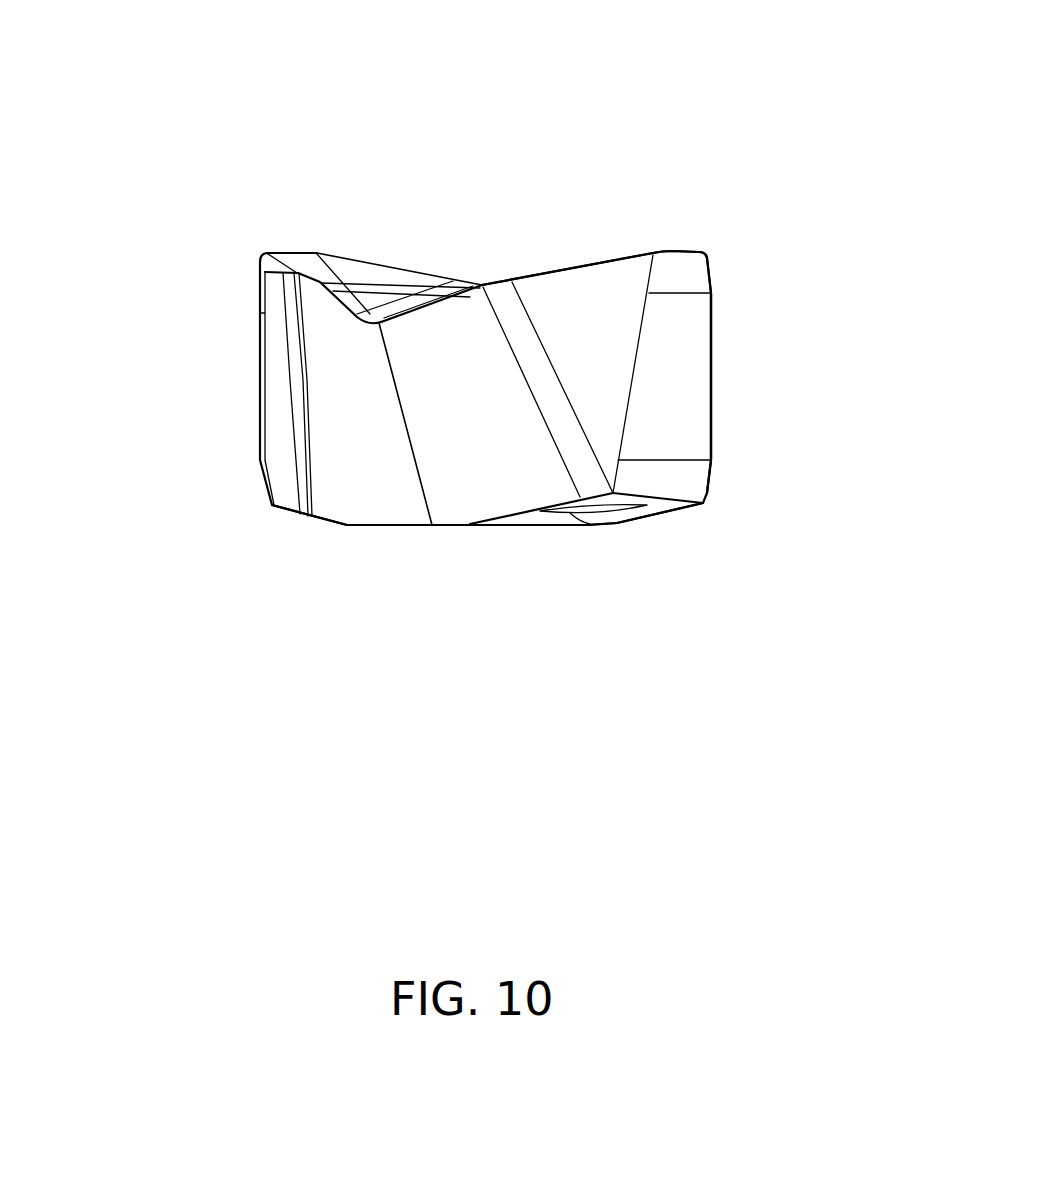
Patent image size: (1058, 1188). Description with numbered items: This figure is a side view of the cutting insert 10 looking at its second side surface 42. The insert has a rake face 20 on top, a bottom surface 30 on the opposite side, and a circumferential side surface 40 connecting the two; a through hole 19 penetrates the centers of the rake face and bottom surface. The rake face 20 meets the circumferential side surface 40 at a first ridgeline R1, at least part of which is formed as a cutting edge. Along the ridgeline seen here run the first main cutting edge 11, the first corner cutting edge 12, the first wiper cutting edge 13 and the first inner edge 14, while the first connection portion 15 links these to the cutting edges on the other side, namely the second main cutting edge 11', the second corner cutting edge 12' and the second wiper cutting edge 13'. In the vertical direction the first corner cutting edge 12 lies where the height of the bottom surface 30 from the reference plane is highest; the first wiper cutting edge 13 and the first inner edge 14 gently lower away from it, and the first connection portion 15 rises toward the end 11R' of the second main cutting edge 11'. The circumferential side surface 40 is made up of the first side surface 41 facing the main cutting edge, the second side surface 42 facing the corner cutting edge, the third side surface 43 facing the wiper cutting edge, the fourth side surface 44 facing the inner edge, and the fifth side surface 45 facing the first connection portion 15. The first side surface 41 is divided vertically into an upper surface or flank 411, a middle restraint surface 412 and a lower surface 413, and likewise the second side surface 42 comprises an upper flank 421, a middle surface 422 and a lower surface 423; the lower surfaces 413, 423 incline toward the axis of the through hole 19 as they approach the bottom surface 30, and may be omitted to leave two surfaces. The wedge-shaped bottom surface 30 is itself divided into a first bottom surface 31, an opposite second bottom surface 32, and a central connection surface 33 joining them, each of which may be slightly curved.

The cutting insert 10 is at (469, 893).
The first main cutting edge 11 is at (738, 202).
The second main cutting edge 11' is at (307, 235).
The end of the second main cutting edge 11R' is at (164, 369).
The first corner cutting edge 12 is at (716, 187).
The second corner cutting edge 12' is at (273, 196).
The first wiper cutting edge 13 is at (567, 203).
The second wiper cutting edge 13' is at (399, 159).
The first inner edge 14 is at (417, 284).
The first connection portion 15 is at (340, 292).
The through hole 19 is at (610, 513).
The rake face 20 is at (439, 270).
The bottom surface 30 is at (412, 537).
The first bottom surface 31 is at (677, 497).
The second bottom surface 32 is at (340, 527).
The central connection surface 33 is at (495, 527).
The circumferential side surface 40 is at (275, 353).
The first side surface 41 is at (848, 273).
The upper surface 411 is at (712, 275).
The middle surface 412 is at (712, 373).
The lower surface 413 is at (710, 477).
The second side surface 42 is at (687, 438).
The upper surface 421 is at (680, 281).
The middle surface 422 is at (683, 376).
The lower surface 423 is at (664, 476).
The third side surface 43 is at (568, 376).
The fourth side surface 44 is at (457, 440).
The fifth side surface 45 is at (333, 417).
The first ridgeline R1 is at (631, 248).